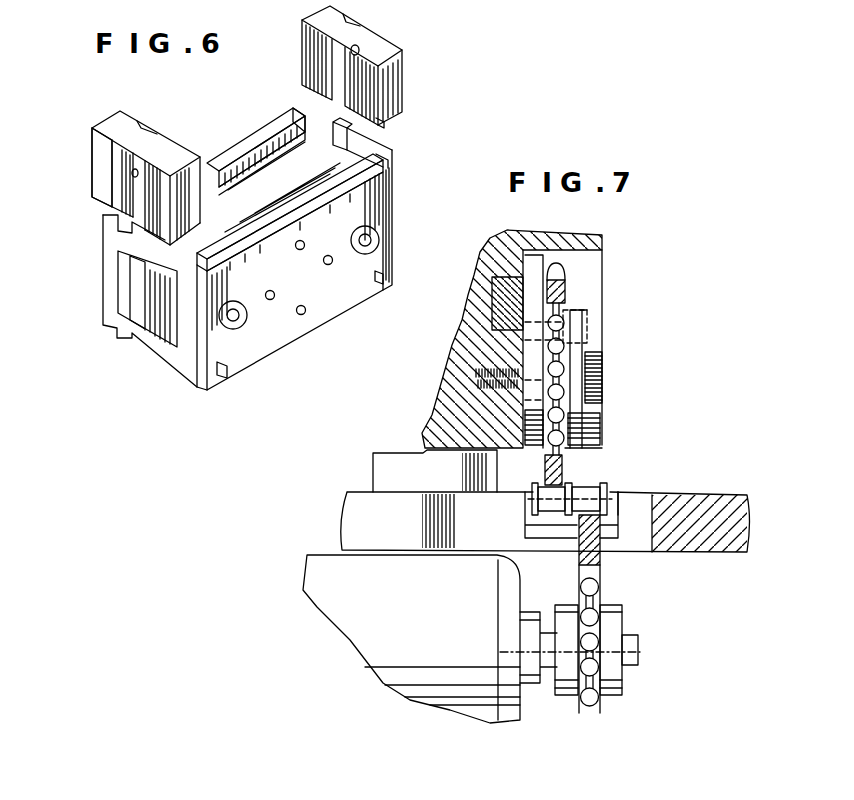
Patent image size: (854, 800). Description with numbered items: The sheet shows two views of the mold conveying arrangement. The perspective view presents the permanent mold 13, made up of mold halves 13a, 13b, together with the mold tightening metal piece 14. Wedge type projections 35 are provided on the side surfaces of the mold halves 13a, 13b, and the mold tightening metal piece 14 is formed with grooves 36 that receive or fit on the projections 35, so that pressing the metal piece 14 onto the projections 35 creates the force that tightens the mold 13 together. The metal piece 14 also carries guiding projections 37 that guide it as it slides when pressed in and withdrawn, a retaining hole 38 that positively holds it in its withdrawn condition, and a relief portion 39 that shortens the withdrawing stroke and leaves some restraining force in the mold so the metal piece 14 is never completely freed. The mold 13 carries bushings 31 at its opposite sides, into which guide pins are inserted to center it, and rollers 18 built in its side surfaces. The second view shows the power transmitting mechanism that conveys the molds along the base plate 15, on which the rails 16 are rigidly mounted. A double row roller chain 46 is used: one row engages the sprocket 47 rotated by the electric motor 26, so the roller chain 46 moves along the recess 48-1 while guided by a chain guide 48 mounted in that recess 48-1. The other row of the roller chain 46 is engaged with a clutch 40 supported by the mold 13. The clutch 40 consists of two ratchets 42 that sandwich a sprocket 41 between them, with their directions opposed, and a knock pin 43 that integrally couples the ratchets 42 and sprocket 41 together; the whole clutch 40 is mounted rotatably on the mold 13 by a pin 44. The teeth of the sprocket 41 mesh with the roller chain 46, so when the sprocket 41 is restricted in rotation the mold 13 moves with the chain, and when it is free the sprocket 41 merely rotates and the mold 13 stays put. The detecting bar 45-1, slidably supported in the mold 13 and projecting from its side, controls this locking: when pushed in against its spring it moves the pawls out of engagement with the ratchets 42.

In FIG. 6, the permanent mold 13 is at (383, 241).
In FIG. 7, the permanent mold 13 is at (603, 236).
In FIG. 6, the mold half 13a is at (280, 133).
In FIG. 6, the mold half 13b is at (258, 222).
In FIG. 6, the mold tightening metal piece 14 is at (92, 150).
In FIG. 7, the base plate 15 is at (716, 495).
In FIG. 7, the rails 16 is at (373, 463).
In FIG. 6, the rollers 18 is at (225, 376).
In FIG. 7, the electric motor 26 is at (435, 617).
In FIG. 6, the bushings 31 is at (362, 256).
In FIG. 6, the wedge type projections 35 is at (128, 282).
In FIG. 6, the grooves 36 is at (345, 60).
In FIG. 6, the guiding projections 37 is at (115, 187).
In FIG. 6, the retaining hole 38 is at (138, 168).
In FIG. 6, the relief portion 39 is at (380, 118).
In FIG. 7, the clutch 40 is at (603, 392).
In FIG. 7, the sprocket 41 is at (565, 290).
In FIG. 7, the ratchets 42 is at (525, 352).
In FIG. 7, the knock pin 43 is at (590, 331).
In FIG. 7, the pin 44 is at (598, 383).
In FIG. 7, the detecting bar 45-1 is at (497, 303).
In FIG. 7, the roller chain 46 is at (588, 490).
In FIG. 7, the sprocket 47 is at (592, 592).
In FIG. 7, the chain guide 48 is at (617, 533).
In FIG. 7, the recess 48-1 is at (617, 517).